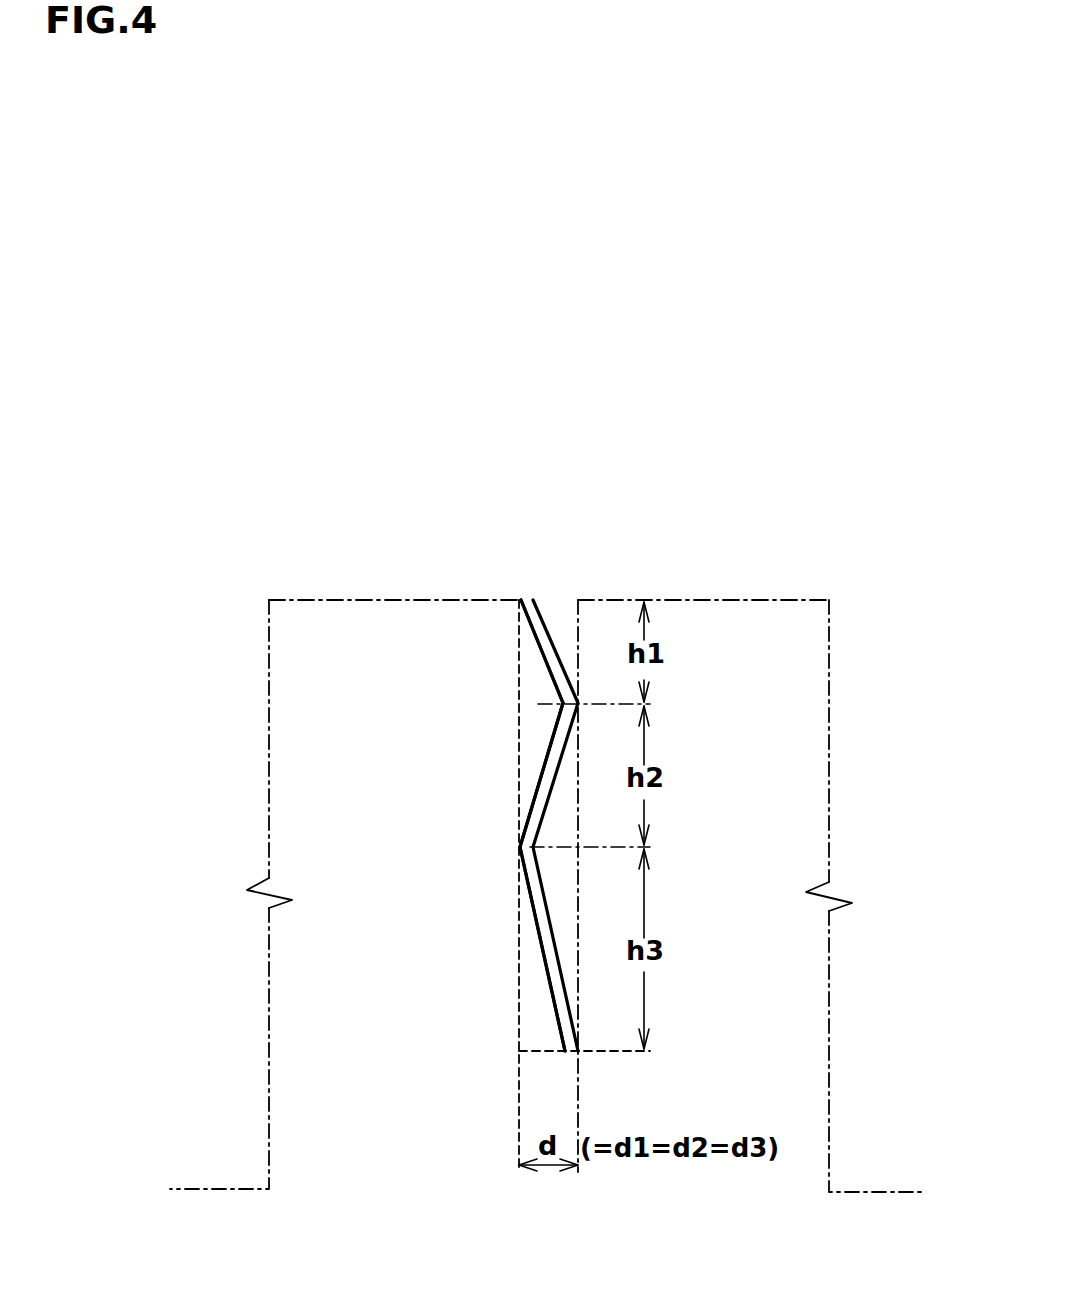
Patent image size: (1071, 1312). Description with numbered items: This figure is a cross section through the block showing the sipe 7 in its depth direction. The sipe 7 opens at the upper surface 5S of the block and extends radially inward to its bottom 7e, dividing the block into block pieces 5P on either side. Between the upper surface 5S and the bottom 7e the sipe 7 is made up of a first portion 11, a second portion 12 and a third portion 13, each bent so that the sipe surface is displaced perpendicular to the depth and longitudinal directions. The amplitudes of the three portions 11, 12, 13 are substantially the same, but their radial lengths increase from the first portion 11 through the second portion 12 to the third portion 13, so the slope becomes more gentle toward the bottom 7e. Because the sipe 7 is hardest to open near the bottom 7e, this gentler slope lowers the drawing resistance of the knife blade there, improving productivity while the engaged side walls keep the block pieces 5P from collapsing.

The upper surface of the block 5S is at (377, 588).
The block pieces 5P is at (444, 626).
The sipe 7 is at (554, 623).
The first portion 11 is at (538, 640).
The second portion 12 is at (544, 768).
The third portion 13 is at (545, 903).
The bottom of the sipe 7e is at (518, 1050).